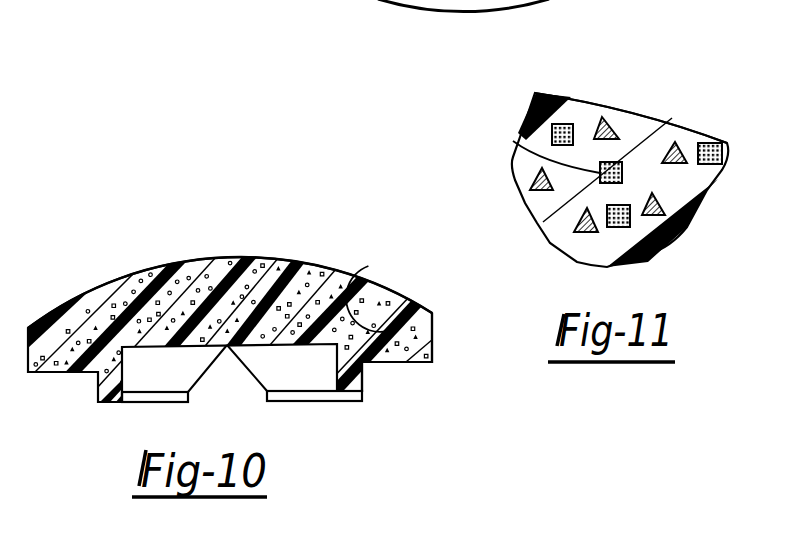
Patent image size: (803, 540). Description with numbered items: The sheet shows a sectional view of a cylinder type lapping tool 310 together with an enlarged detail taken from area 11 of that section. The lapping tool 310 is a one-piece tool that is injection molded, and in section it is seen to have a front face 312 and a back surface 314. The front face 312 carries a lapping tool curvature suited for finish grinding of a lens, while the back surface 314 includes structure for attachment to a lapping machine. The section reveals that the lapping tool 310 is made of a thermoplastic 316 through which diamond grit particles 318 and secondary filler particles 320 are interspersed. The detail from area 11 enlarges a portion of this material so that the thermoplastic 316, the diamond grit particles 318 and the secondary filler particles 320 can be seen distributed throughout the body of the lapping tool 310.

In FIG. 10, the lapping tool 310 is at (146, 250).
In FIG. 11, the lapping tool 310 is at (606, 76).
In FIG. 10, the front face 312 is at (199, 260).
In FIG. 10, the back surface 314 is at (345, 400).
In FIG. 10, the thermoplastic 316 is at (413, 338).
In FIG. 11, the thermoplastic 316 is at (688, 140).
In FIG. 10, the diamond grit particles 318 is at (222, 262).
In FIG. 11, the diamond grit particles 318 is at (551, 141).
In FIG. 10, the secondary filler particles 320 is at (292, 268).
In FIG. 11, the secondary filler particles 320 is at (665, 155).
In FIG. 10, the area 11 is at (418, 316).